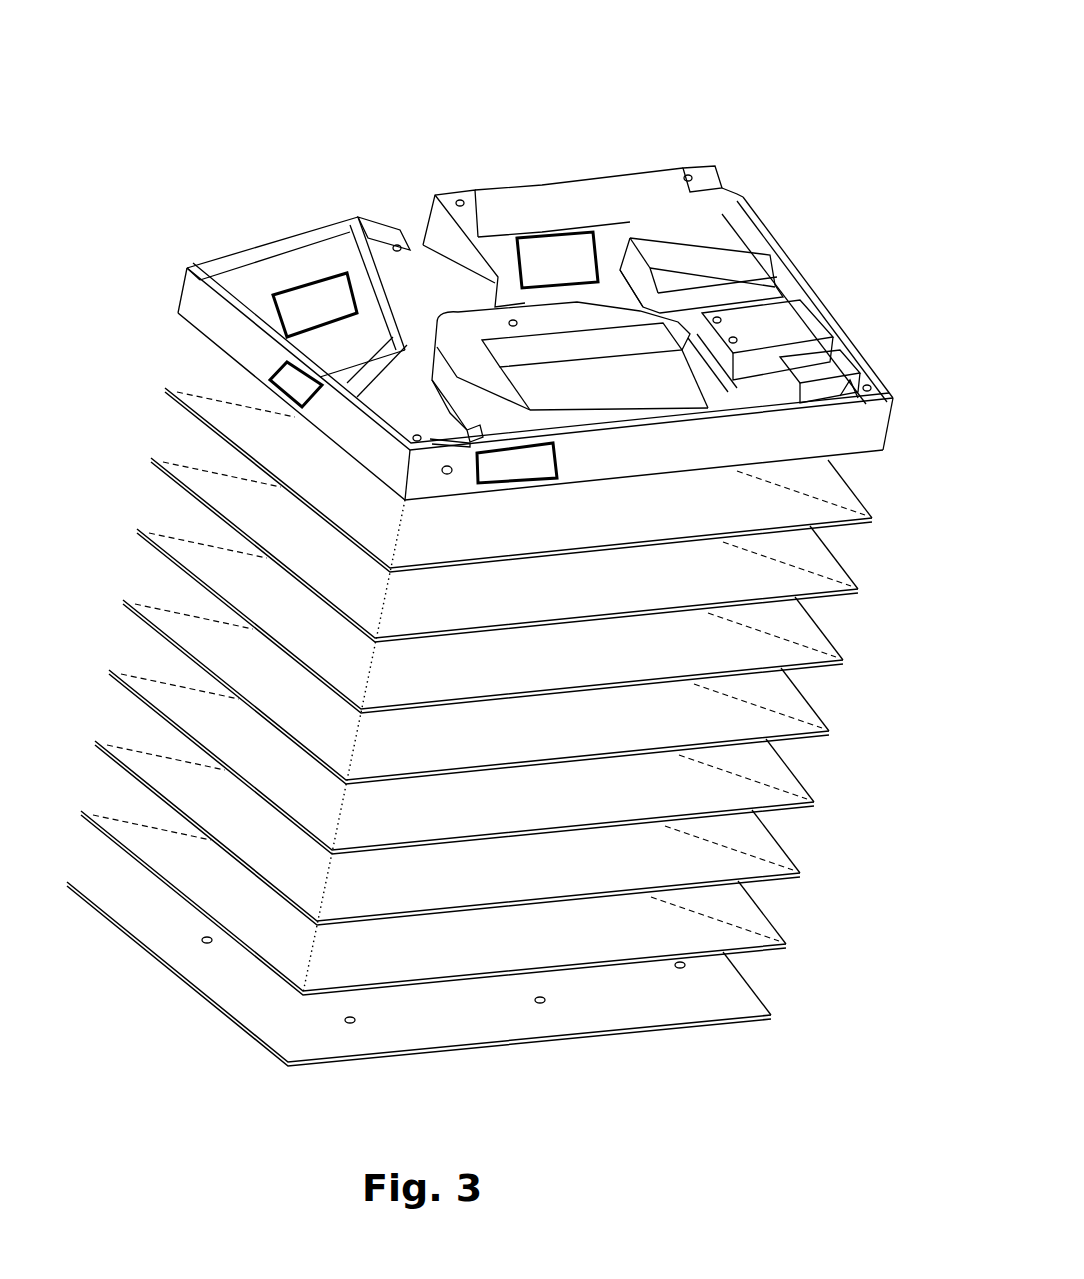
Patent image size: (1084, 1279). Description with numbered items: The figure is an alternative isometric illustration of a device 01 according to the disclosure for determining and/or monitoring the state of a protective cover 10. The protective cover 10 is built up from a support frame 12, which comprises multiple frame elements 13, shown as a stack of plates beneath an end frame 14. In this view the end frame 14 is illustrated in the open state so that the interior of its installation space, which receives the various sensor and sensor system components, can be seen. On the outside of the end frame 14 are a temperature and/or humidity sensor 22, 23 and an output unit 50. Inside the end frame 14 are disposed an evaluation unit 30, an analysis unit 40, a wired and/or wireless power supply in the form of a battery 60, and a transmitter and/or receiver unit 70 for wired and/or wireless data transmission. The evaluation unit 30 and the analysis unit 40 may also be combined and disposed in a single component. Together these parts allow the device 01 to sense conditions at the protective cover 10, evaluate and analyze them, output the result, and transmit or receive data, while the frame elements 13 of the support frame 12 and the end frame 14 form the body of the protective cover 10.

The device 01 is at (643, 97).
The protective cover 10 is at (746, 114).
The support frame 12 is at (494, 727).
The frame elements 13 is at (710, 970).
The end frame 14 is at (835, 421).
The temperature and/or humidity sensor 22 is at (426, 260).
The temperature and/or humidity sensor 23 is at (292, 378).
The evaluation unit 30 is at (560, 250).
The analysis unit 40 is at (312, 305).
The output unit 50 is at (537, 458).
The battery 60 is at (757, 327).
The transmitter and/or receiver unit 70 is at (700, 250).